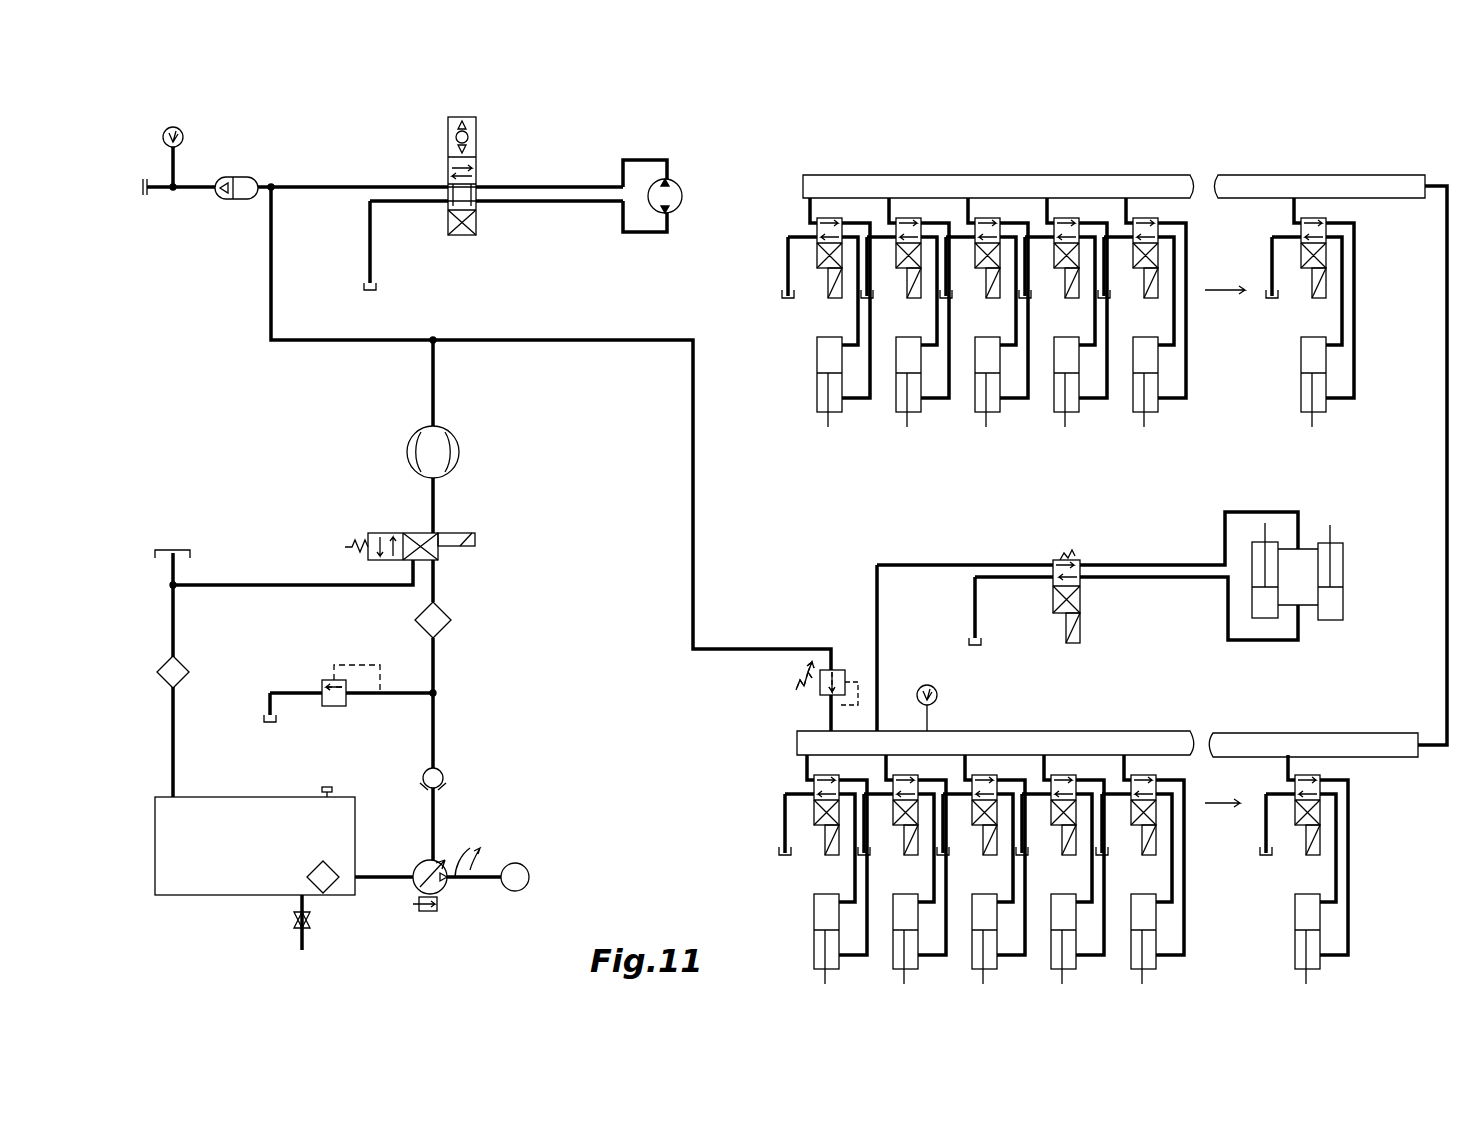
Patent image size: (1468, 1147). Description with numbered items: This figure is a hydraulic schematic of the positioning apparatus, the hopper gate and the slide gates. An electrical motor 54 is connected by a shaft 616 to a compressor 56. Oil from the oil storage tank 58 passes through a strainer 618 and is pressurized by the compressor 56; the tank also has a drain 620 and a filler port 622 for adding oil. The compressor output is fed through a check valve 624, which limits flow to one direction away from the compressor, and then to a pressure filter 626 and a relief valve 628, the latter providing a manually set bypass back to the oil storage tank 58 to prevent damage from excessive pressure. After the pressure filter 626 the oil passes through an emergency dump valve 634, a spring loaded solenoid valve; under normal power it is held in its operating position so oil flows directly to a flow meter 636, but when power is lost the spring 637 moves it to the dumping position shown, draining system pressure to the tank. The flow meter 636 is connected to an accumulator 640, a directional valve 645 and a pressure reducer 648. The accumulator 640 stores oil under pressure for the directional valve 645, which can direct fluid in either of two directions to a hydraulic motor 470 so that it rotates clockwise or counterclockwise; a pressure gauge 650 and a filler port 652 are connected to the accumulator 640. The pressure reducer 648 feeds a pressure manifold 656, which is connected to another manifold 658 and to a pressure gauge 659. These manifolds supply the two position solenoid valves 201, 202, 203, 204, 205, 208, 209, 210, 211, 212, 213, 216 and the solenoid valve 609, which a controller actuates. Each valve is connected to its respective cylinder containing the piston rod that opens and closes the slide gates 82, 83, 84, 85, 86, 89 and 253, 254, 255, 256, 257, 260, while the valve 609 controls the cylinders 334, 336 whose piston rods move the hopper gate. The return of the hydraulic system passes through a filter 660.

The electrical motor 54 is at (527, 870).
The compressor 56 is at (442, 890).
The oil storage tank 58 is at (210, 873).
The slide gate 82 is at (817, 360).
The slide gate 83 is at (897, 400).
The slide gate 84 is at (985, 400).
The slide gate 85 is at (1065, 400).
The slide gate 86 is at (1145, 400).
The slide gate 89 is at (1305, 352).
The two position solenoid valve 201 is at (817, 230).
The two position solenoid valve 202 is at (900, 225).
The two position solenoid valve 203 is at (980, 225).
The two position solenoid valve 204 is at (1060, 225).
The two position solenoid valve 205 is at (1140, 225).
The two position solenoid valve 208 is at (1305, 252).
The two position solenoid valve 209 is at (816, 785).
The two position solenoid valve 210 is at (898, 790).
The two position solenoid valve 211 is at (978, 790).
The two position solenoid valve 212 is at (1058, 790).
The two position solenoid valve 213 is at (1140, 785).
The two position solenoid valve 216 is at (1322, 785).
The slide gate 253 is at (814, 908).
The slide gate 254 is at (893, 910).
The slide gate 255 is at (972, 910).
The slide gate 256 is at (1051, 910).
The slide gate 257 is at (1131, 910).
The slide gate 260 is at (1312, 915).
The cylinder 334 is at (1252, 548).
The cylinder 336 is at (1343, 560).
The hydraulic motor 470 is at (672, 183).
The solenoid valve 609 is at (1055, 565).
The shaft 616 is at (468, 848).
The strainer 618 is at (335, 895).
The drain 620 is at (298, 920).
The filler port 622 is at (325, 785).
The check valve 624 is at (440, 768).
The pressure filter 626 is at (451, 615).
The relief valve 628 is at (333, 706).
The emergency dump valve 634 is at (380, 533).
The flow meter 636 is at (455, 438).
The spring 637 is at (348, 548).
The accumulator 640 is at (242, 175).
The directional valve 645 is at (448, 130).
The pressure reducer 648 is at (842, 670).
The pressure gauge 650 is at (174, 132).
The filler port 652 is at (147, 200).
The pressure manifold 656 is at (1028, 731).
The manifold 658 is at (1395, 200).
The pressure gauge 659 is at (935, 688).
The filter 660 is at (162, 665).